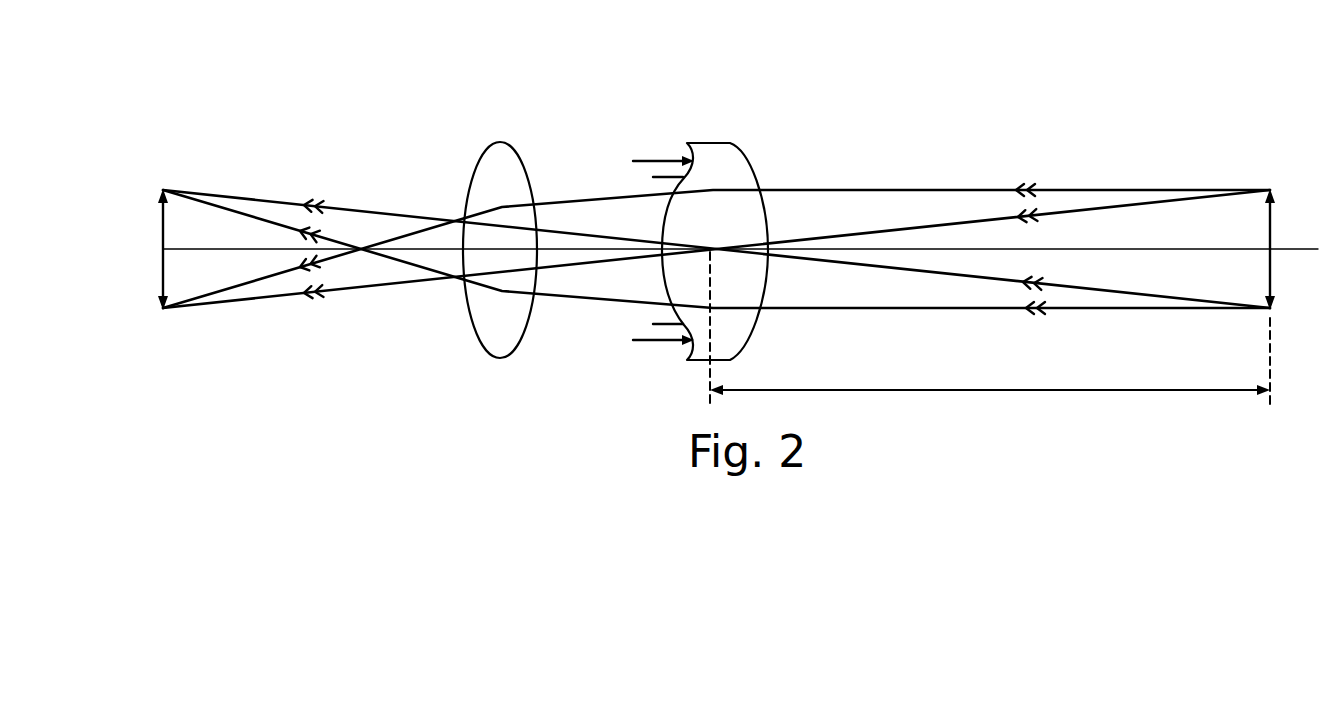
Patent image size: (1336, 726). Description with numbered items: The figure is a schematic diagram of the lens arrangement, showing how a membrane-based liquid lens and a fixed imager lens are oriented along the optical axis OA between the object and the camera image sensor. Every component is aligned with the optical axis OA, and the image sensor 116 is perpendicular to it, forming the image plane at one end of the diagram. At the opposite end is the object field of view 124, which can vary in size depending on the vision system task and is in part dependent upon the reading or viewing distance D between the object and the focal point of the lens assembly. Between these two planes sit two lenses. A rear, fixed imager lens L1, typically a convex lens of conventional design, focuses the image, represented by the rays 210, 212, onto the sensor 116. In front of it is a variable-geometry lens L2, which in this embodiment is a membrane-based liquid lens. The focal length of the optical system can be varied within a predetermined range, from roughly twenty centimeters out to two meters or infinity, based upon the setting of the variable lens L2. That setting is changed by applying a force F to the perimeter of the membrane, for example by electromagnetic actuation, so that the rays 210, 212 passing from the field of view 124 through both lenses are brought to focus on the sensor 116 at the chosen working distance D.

The image sensor 116 is at (162, 227).
The field of view 124 is at (1272, 246).
The rays 210 is at (397, 213).
The rays 212 is at (329, 236).
The fixed imager lens L1 is at (502, 143).
The variable lens L2 is at (718, 143).
The force F is at (653, 158).
The reading distance D is at (942, 388).
The optical axis OA is at (1287, 252).